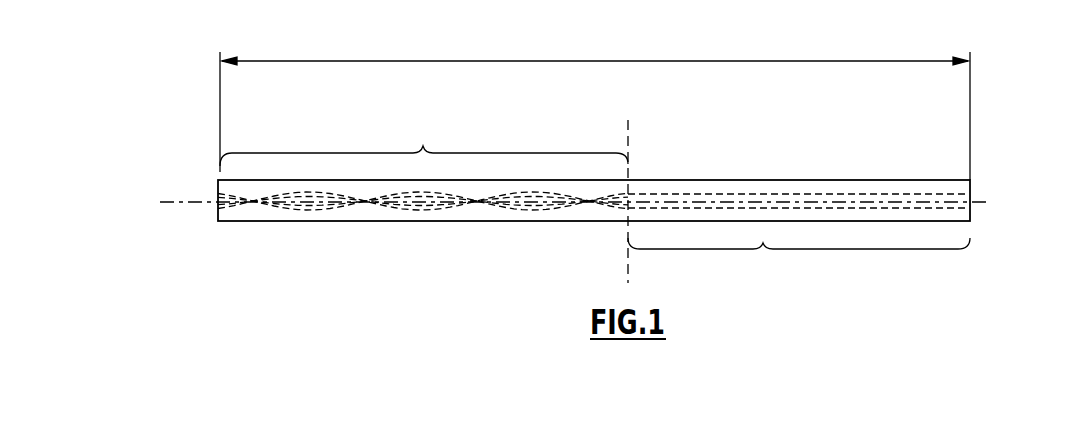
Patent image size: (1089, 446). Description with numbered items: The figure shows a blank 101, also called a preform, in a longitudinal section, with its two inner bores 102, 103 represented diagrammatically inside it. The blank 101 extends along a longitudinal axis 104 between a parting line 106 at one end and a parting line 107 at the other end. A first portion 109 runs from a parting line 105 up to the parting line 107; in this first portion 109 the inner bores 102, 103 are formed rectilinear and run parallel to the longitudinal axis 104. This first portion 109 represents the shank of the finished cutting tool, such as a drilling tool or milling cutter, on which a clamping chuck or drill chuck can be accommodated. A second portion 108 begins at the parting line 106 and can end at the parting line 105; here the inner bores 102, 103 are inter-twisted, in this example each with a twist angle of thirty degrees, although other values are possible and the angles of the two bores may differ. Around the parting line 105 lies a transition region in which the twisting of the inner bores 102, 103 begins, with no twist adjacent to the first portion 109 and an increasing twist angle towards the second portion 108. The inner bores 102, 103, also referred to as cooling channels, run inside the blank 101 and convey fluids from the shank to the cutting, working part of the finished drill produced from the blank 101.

The blank 101 is at (820, 152).
The inner bore 102 is at (890, 190).
The inner bore 103 is at (838, 212).
The longitudinal axis 104 is at (986, 202).
The parting line 105 is at (630, 185).
The parting line 106 is at (584, 95).
The parting line 107 is at (971, 100).
The second portion 108 is at (423, 162).
The first portion 109 is at (799, 263).